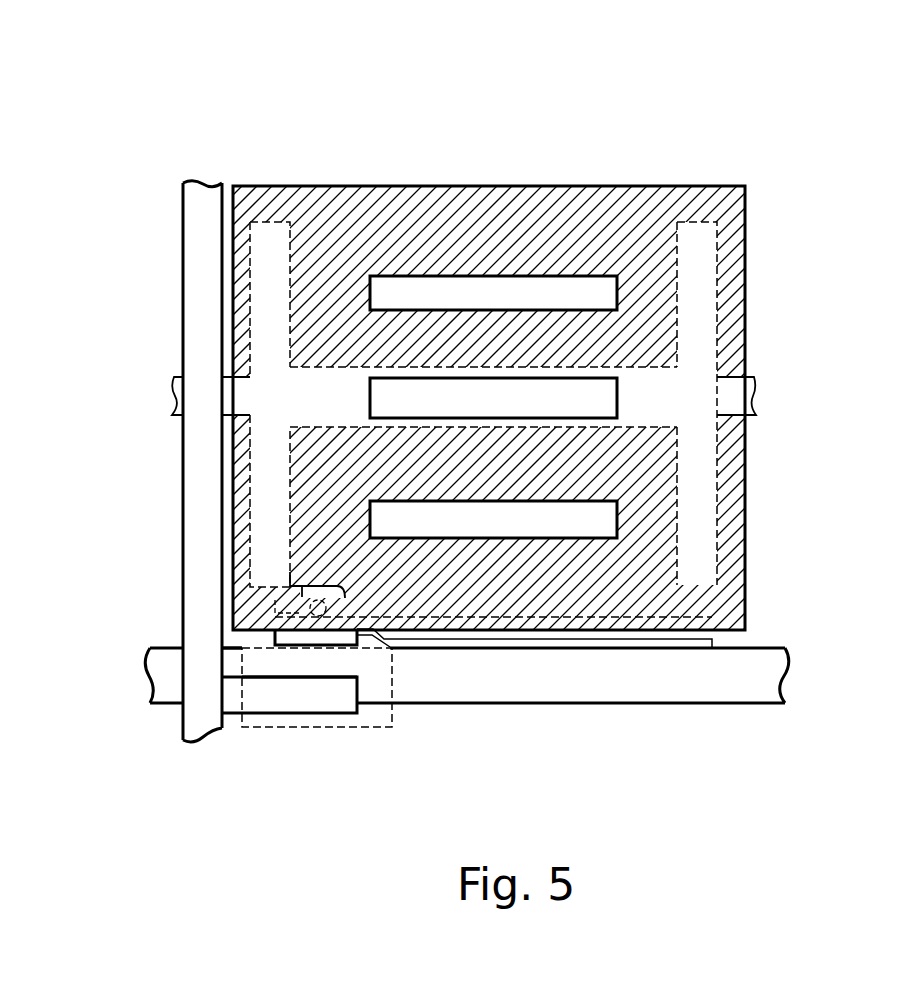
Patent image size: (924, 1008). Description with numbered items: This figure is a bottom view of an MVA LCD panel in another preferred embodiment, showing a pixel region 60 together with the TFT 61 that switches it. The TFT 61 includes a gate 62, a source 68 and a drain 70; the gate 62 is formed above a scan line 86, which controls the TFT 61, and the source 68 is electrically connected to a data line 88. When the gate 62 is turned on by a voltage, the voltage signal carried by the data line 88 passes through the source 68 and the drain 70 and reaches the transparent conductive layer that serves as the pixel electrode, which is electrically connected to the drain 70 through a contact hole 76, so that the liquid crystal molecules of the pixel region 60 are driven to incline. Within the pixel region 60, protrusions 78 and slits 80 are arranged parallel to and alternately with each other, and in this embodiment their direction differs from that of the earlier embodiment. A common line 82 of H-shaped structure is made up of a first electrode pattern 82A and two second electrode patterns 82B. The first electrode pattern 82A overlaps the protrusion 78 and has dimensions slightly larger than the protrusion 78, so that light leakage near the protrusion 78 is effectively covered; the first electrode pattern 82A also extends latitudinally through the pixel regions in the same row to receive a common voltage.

The pixel region 60 is at (699, 152).
The TFT 61 is at (370, 731).
The gate 62 is at (279, 662).
The source 68 is at (325, 705).
The drain 70 is at (297, 638).
The contact hole 76 is at (305, 600).
The protrusion 78 is at (507, 412).
The slit 80 is at (512, 288).
The common line 82 is at (768, 363).
The first electrode pattern 82A is at (643, 397).
The second electrode pattern 82B is at (260, 293).
The scan line 86 is at (607, 705).
The data line 88 is at (183, 514).